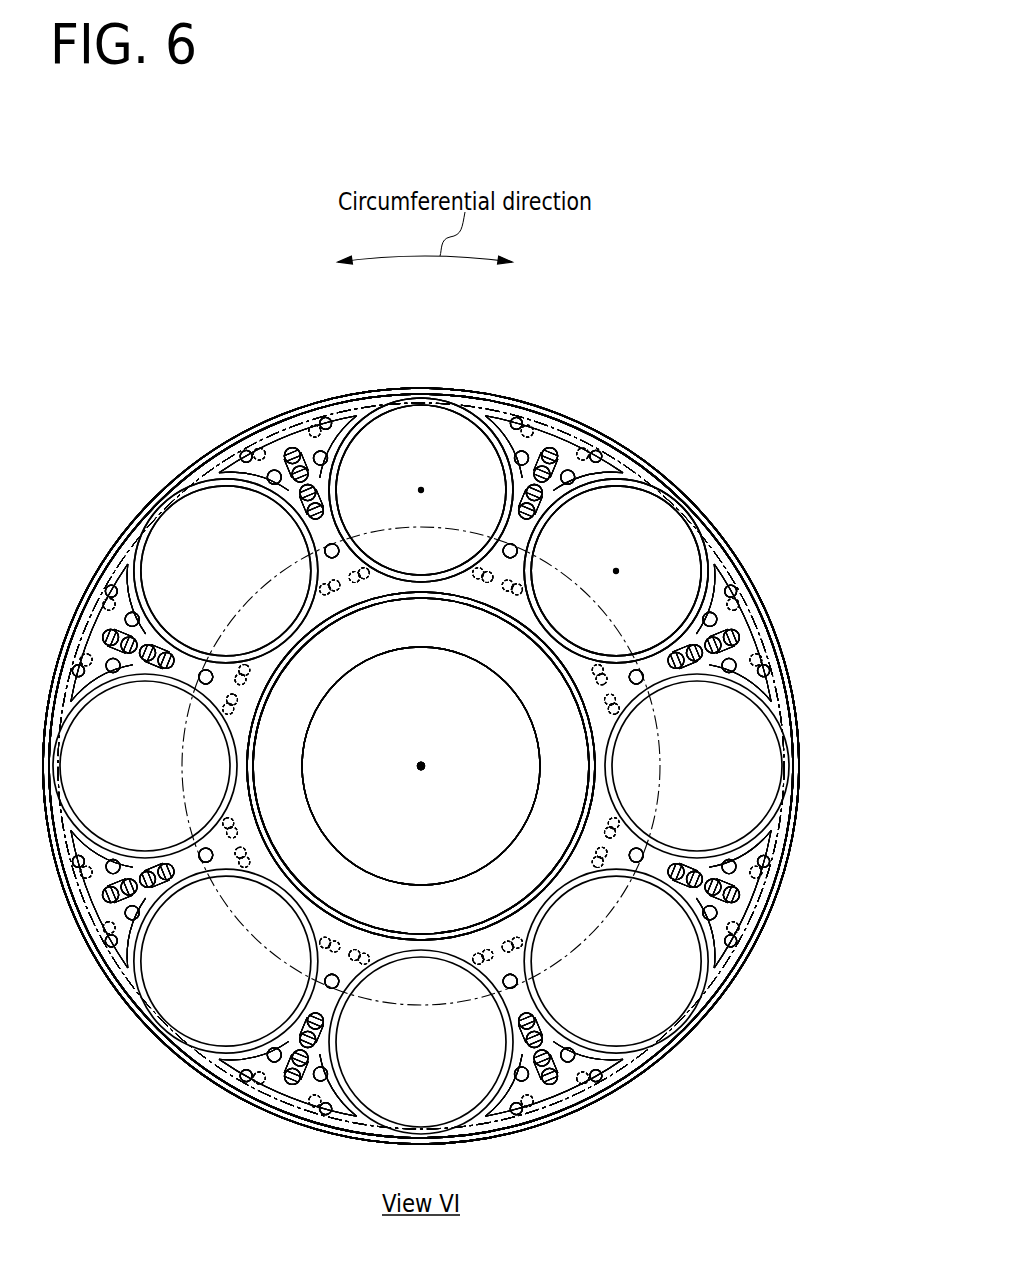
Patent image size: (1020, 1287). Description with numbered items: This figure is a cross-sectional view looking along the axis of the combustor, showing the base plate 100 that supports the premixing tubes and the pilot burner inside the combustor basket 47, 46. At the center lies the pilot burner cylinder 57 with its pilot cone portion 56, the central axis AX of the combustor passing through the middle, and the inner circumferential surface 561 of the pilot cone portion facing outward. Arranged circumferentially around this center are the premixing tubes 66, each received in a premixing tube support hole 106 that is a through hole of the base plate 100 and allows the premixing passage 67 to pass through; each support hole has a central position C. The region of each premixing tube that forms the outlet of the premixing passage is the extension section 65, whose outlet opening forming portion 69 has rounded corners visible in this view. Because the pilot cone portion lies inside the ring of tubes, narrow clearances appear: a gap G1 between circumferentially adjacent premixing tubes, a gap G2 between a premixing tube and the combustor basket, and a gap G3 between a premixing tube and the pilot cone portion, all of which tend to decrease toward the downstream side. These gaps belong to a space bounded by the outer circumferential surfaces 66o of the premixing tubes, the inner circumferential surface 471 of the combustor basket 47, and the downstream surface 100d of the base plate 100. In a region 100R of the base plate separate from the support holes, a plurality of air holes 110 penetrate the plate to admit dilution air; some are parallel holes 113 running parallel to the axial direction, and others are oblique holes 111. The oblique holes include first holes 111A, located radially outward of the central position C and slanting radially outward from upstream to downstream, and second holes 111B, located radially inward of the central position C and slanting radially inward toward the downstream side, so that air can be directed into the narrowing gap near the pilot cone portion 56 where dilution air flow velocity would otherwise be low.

The first hole 111A is at (325, 428).
The oblique hole 111 is at (421, 709).
The air hole 110 is at (421, 709).
The parallel hole 113 is at (543, 472).
The second hole 111B is at (502, 618).
The premixing tube 66 is at (367, 392).
The gap between premixing tube and combustor basket G2 is at (477, 386).
The outer circumferential surface 66o is at (498, 418).
The region 100R is at (633, 466).
The base plate 100 is at (640, 440).
The premixing tube support hole 106 is at (683, 490).
The outlet opening forming portion 69 is at (730, 531).
The extension section 65 is at (447, 766).
The inner circumferential surface 471 is at (762, 616).
The downstream surface 100d is at (778, 628).
The combustor basket 47 is at (790, 667).
The housing 46 is at (472, 766).
The pilot cone portion 56 is at (578, 758).
The pilot burner cylinder 57 is at (568, 766).
The inner circumferential surface 561 is at (316, 628).
The gap between adjacent premixing tubes G1 is at (308, 526).
The gap between premixing tube and pilot cone portion G3 is at (445, 594).
The central position C is at (424, 489).
The premixing passage 67 is at (483, 513).
The central axis AX is at (423, 768).